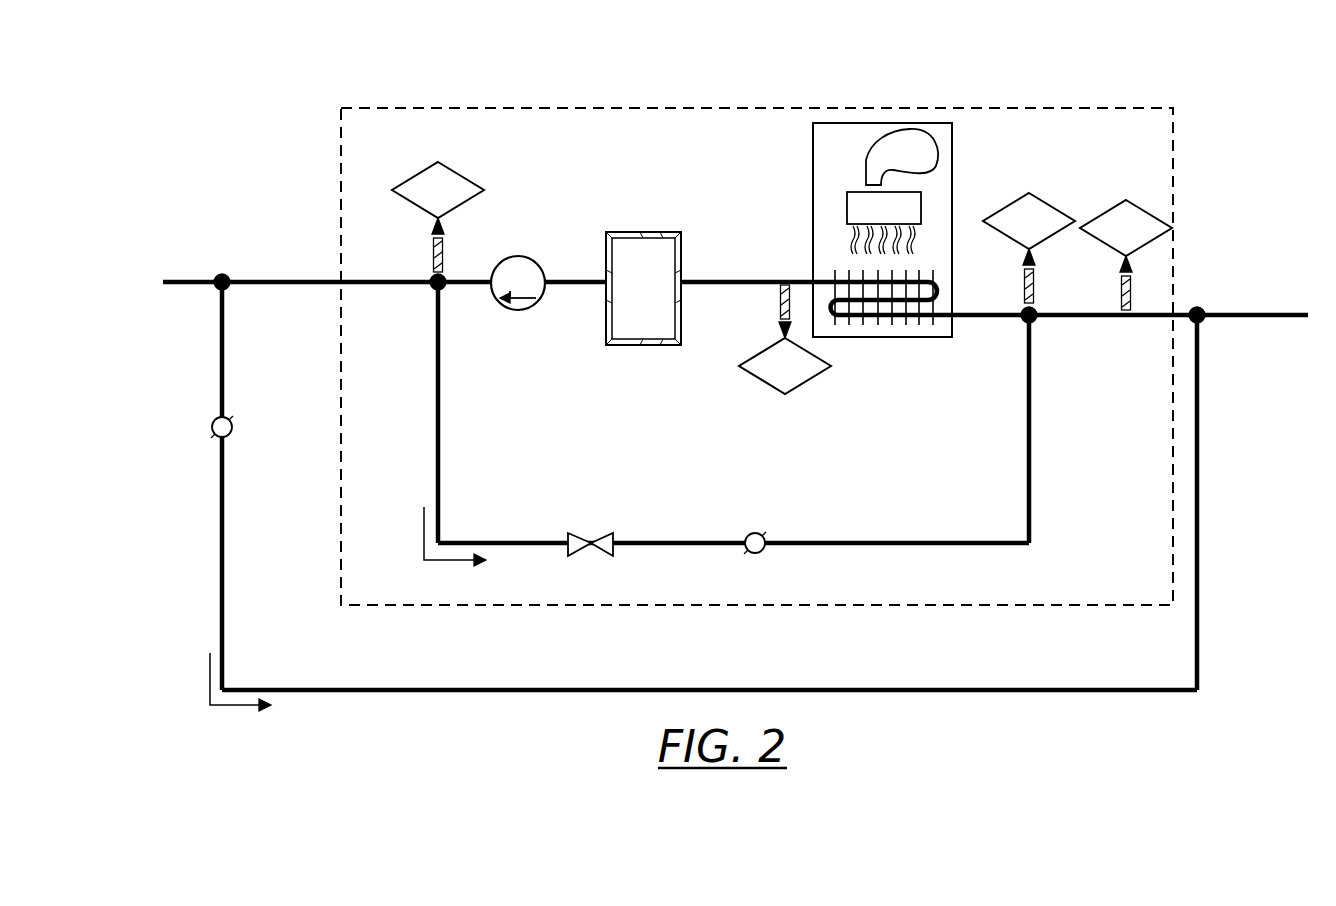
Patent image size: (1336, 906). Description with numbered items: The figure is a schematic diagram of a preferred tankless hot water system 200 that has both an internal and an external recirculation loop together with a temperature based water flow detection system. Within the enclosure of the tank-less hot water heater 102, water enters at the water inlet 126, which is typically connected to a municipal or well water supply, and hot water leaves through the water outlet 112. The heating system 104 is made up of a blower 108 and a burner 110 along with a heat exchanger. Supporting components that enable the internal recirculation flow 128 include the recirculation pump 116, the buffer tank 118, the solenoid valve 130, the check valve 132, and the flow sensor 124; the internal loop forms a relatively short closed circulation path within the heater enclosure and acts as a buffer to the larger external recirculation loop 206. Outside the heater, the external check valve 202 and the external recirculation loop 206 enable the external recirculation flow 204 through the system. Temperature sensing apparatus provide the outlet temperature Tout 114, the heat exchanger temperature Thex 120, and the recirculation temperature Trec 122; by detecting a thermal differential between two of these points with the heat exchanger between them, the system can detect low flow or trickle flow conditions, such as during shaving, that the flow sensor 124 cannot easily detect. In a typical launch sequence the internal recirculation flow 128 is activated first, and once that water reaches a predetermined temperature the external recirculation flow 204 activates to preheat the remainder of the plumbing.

The tank-less hot water heater 102 is at (1048, 108).
The heating system 104 is at (813, 140).
The blower 108 is at (940, 140).
The burner 110 is at (847, 205).
The water outlet 112 is at (264, 281).
The water outlet temperature sensor (Tout) 114 is at (416, 203).
The recirculation pump 116 is at (510, 258).
The buffer tank 118 is at (620, 298).
The heat exchanger temperature sensor (Thex) 120 is at (763, 379).
The recirculation temperature sensor (Trec) 122 is at (1007, 234).
The flow sensor 124 is at (1104, 241).
The water inlet 126 is at (1262, 314).
The internal recirculation flow 128 is at (423, 532).
The solenoid valve 130 is at (596, 552).
The check valve 132 is at (748, 553).
The tank-less hot water system having both internal and external recirculation loops 200 is at (1224, 130).
The external check valve 202 is at (233, 418).
The external recirculation flow 204 is at (209, 676).
The external recirculation loop 206 is at (749, 689).